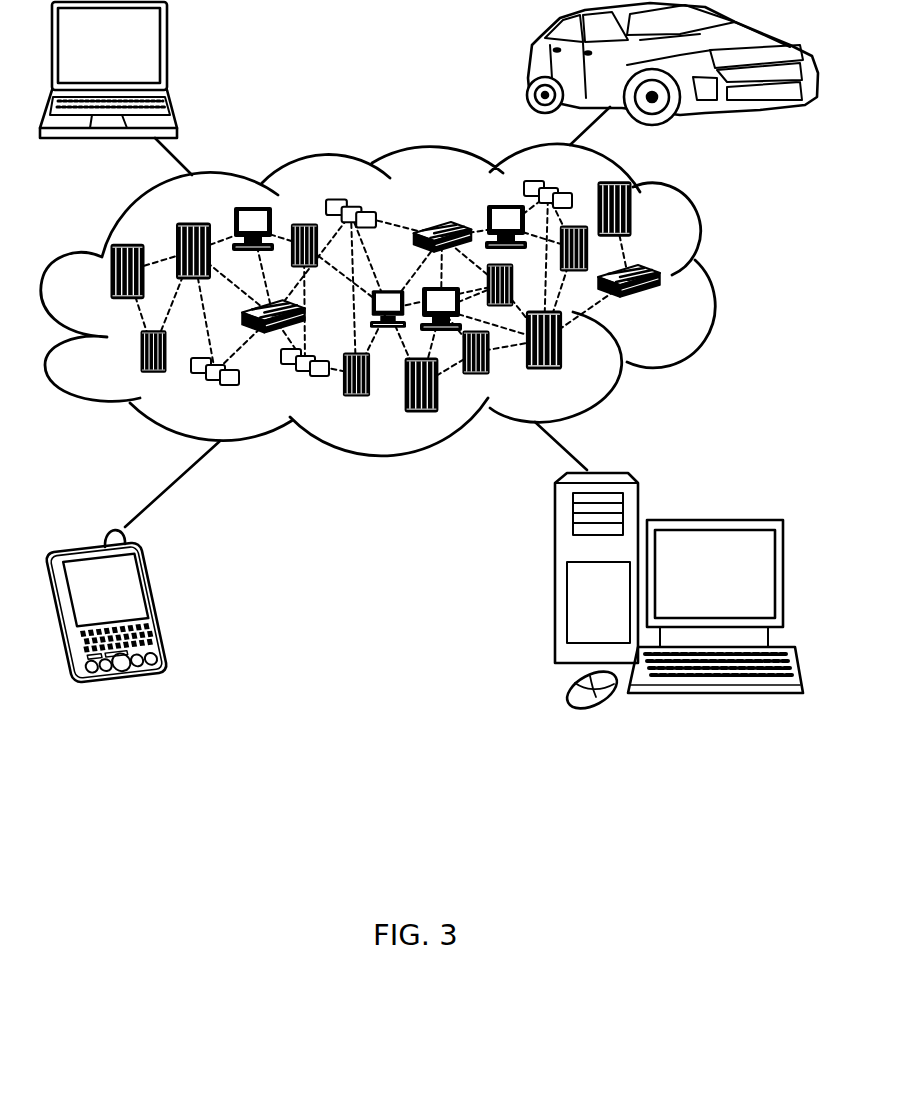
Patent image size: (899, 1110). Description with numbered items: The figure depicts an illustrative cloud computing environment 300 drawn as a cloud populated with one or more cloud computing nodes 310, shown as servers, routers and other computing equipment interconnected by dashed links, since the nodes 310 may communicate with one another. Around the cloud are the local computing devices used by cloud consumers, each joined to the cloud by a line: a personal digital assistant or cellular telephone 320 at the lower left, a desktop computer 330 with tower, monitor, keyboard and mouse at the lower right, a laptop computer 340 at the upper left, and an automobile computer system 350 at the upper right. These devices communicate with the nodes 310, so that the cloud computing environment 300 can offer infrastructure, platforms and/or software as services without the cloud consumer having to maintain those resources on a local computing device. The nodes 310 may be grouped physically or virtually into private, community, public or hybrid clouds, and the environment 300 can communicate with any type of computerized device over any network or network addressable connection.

The cloud computing environment 300 is at (710, 278).
The cloud computing nodes 310 is at (663, 303).
The personal digital assistant or cellular telephone 320 is at (158, 595).
The desktop computer 330 is at (712, 520).
The laptop computer 340 is at (167, 52).
The automobile computer system 350 is at (532, 63).